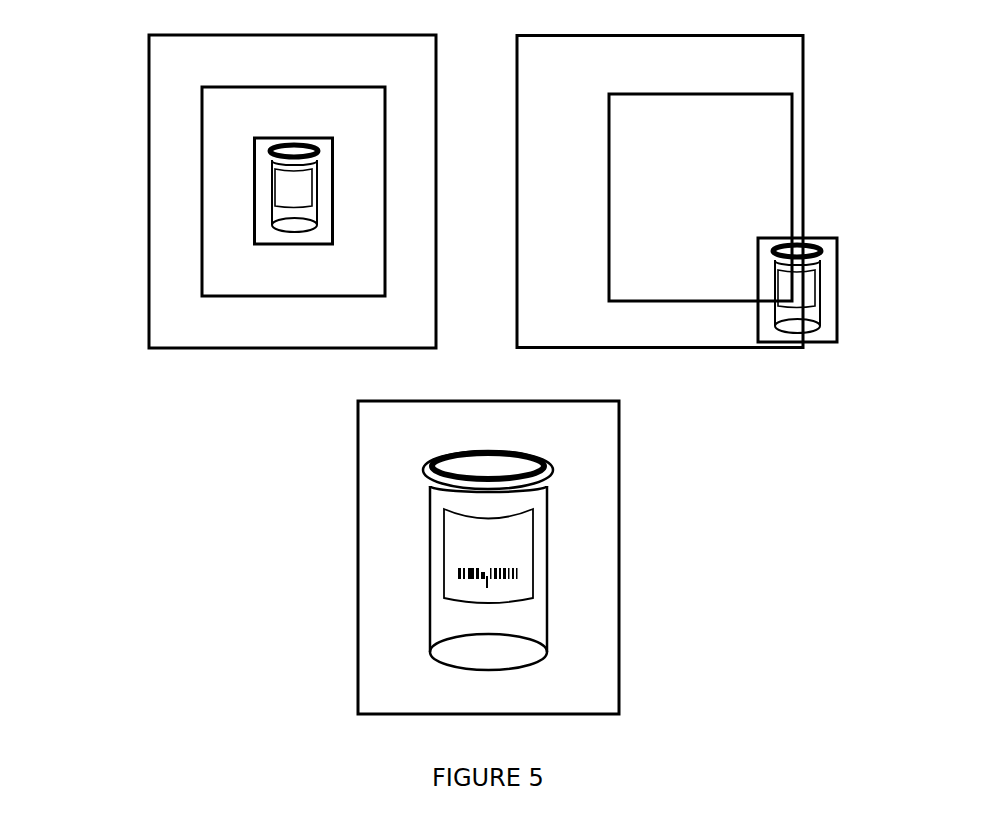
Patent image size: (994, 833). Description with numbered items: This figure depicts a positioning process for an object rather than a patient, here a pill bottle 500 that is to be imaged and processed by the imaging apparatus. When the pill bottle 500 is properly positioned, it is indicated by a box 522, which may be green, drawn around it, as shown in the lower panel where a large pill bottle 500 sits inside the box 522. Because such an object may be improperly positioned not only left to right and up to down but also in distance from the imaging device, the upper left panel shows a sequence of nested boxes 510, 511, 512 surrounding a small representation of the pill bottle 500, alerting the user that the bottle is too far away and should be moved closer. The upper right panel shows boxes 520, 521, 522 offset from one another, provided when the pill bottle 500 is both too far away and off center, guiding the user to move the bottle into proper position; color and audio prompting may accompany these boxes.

The pill bottle 500 is at (268, 153).
The box 510 is at (148, 137).
The box 511 is at (201, 192).
The box 512 is at (254, 243).
The box 520 is at (803, 60).
The box 521 is at (727, 91).
The box 522 is at (837, 322).